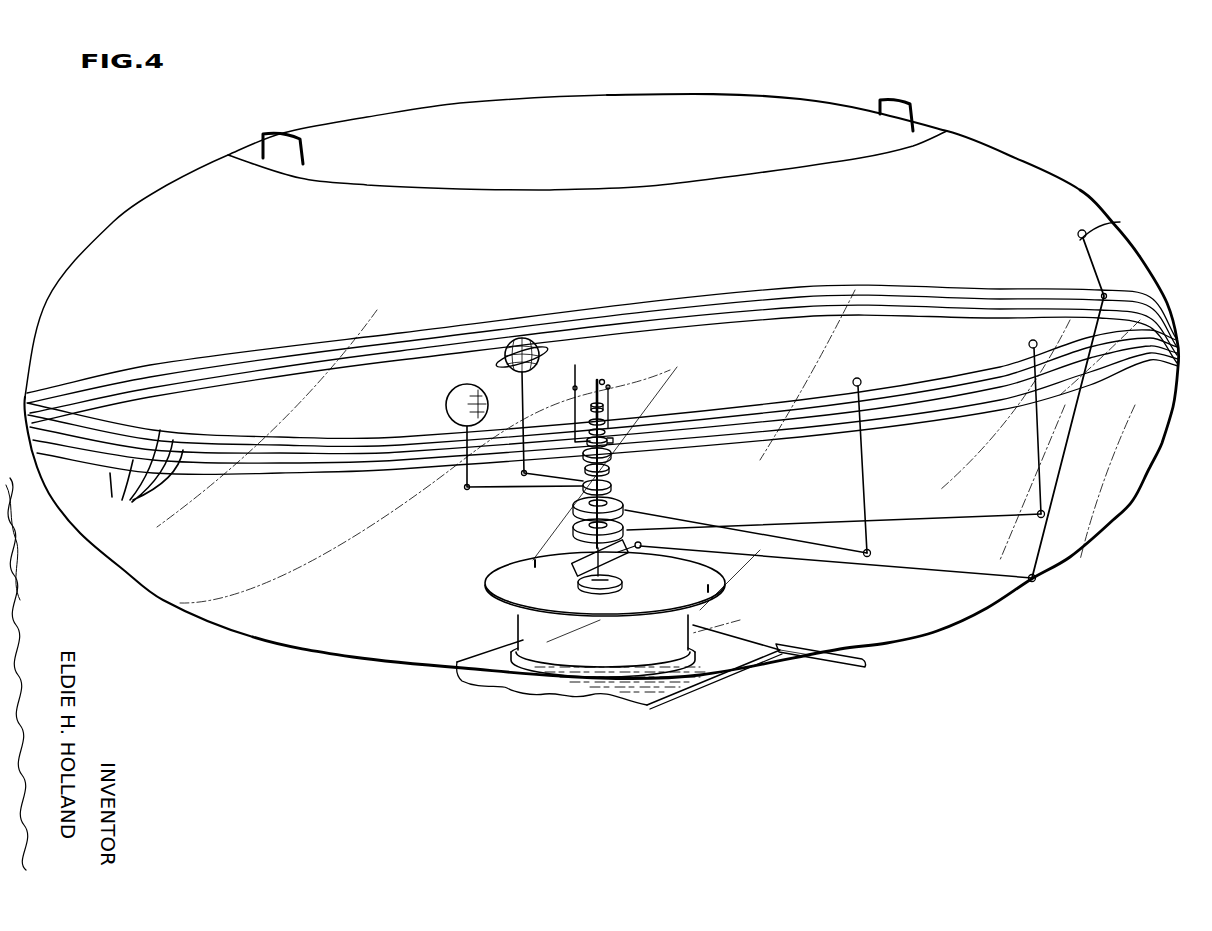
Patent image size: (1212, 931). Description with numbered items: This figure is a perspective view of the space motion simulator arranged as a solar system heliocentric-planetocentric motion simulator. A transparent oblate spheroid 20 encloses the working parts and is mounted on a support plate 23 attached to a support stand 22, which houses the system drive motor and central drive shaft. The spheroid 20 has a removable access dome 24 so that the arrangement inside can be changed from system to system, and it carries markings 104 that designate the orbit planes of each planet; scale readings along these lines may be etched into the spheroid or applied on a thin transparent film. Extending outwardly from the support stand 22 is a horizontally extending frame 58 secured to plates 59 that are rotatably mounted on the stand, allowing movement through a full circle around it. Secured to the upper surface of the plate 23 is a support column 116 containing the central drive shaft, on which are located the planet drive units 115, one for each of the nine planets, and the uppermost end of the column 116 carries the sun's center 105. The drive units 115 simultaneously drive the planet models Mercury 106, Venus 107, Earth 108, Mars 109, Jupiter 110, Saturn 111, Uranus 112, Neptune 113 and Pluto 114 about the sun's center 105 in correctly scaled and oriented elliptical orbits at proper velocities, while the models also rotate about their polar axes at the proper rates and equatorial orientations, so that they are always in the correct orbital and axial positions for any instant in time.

The transparent oblate spheroid 20 is at (116, 214).
The support stand 22 is at (626, 652).
The support plate 23 is at (487, 586).
The access dome 24 is at (364, 114).
The horizontally extending frame 58 is at (852, 667).
The plates 59 is at (674, 690).
The markings 104 is at (1136, 212).
The sun's center 105 is at (597, 378).
The Mercury 106 is at (604, 381).
The Venus 107 is at (611, 388).
The Earth 108 is at (575, 366).
The Mars 109 is at (606, 406).
The Jupiter 110 is at (446, 403).
The Saturn 111 is at (523, 337).
The Uranus 112 is at (878, 370).
The Neptune 113 is at (1029, 344).
The Pluto 114 is at (1080, 232).
The planet drive units 115 is at (604, 472).
The support column 116 is at (606, 566).